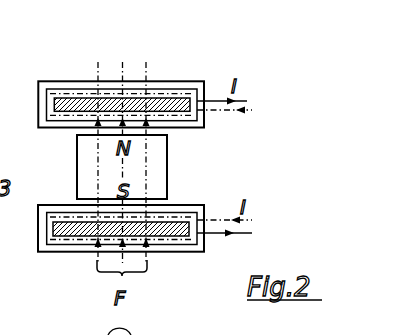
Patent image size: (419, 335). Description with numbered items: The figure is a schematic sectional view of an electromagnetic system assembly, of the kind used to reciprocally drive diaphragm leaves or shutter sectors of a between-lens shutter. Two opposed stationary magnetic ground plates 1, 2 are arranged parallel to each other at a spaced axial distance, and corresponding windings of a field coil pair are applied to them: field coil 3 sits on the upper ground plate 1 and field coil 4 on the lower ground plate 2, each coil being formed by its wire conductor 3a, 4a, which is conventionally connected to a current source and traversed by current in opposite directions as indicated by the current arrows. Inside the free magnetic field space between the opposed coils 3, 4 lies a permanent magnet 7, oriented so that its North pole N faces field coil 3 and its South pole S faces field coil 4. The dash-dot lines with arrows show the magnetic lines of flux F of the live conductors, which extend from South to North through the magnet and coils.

The stationary magnetic ground plate 1 is at (54, 103).
The stationary magnetic ground plate 2 is at (53, 229).
The field coil 3 is at (167, 81).
The wire conductor 3a is at (82, 89).
The field coil 4 is at (167, 252).
The wire conductor 4a is at (66, 244).
The permanent magnet 7 is at (167, 166).